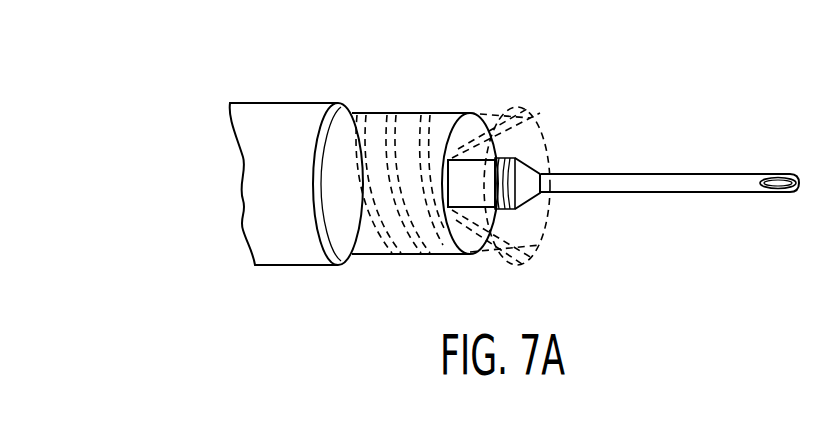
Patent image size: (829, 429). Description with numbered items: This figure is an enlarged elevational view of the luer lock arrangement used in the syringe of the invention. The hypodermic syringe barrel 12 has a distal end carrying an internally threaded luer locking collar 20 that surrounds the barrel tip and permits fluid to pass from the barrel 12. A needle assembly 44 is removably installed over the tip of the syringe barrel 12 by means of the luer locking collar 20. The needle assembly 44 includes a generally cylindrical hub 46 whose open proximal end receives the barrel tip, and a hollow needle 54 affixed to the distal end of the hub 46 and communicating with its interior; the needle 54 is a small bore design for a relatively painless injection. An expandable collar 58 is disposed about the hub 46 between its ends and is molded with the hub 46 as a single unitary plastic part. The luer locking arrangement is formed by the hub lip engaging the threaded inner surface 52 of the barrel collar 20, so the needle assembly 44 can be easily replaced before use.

The syringe barrel 12 is at (323, 103).
The luer locking collar 20 is at (419, 113).
The needle assembly 44 is at (543, 157).
The hub 46 is at (541, 160).
The threaded inner surface 52 is at (492, 231).
The hollow needle 54 is at (702, 177).
The expandable collar 58 is at (496, 107).